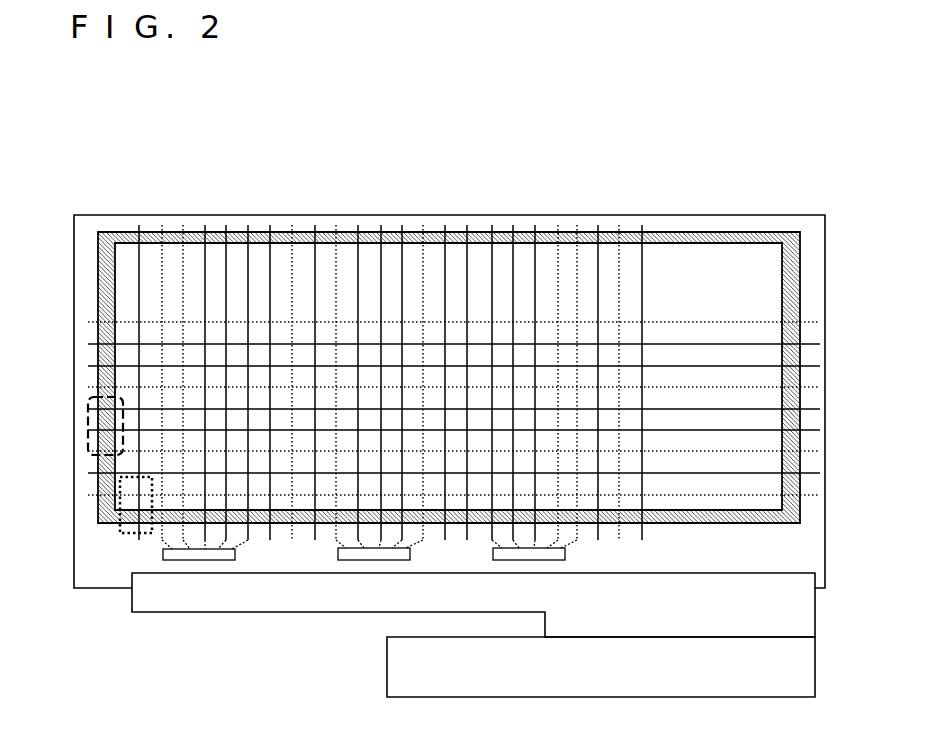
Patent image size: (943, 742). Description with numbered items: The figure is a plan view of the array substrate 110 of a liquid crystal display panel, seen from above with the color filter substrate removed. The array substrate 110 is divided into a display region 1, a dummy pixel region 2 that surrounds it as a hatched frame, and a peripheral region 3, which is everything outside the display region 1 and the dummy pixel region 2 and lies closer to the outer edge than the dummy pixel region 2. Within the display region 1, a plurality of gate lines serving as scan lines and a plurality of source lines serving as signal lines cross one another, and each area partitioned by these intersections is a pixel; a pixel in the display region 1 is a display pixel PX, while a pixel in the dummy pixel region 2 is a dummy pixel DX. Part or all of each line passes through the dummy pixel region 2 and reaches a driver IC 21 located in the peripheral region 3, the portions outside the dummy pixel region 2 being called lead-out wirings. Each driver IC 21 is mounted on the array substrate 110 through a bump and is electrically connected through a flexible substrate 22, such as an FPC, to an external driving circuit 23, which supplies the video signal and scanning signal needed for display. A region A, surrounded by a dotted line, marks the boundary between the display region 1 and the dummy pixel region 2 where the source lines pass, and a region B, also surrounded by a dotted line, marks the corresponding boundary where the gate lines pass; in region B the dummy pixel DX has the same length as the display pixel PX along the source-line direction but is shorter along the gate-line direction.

The array substrate 110 is at (525, 215).
The display region 1 is at (706, 263).
The dummy pixel region 2 is at (672, 240).
The peripheral region 3 is at (472, 648).
The driver IC 21 is at (362, 557).
The flexible substrate 22 is at (185, 590).
The external driving circuit 23 is at (645, 657).
The region A is at (120, 528).
The region B is at (88, 420).
The display pixel PX is at (95, 470).
The dummy pixel DX is at (105, 525).